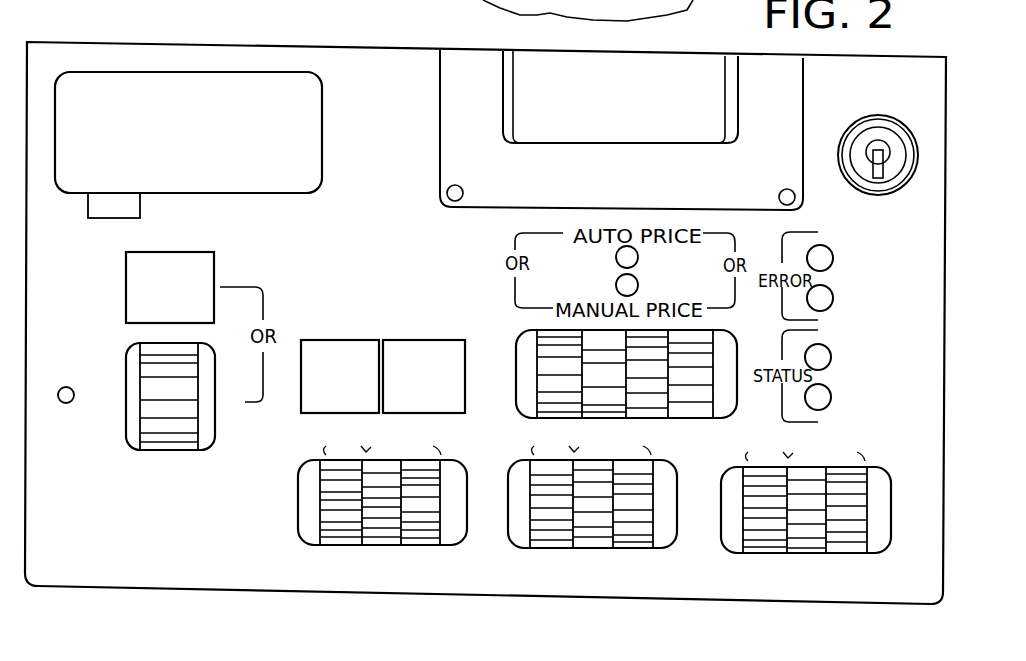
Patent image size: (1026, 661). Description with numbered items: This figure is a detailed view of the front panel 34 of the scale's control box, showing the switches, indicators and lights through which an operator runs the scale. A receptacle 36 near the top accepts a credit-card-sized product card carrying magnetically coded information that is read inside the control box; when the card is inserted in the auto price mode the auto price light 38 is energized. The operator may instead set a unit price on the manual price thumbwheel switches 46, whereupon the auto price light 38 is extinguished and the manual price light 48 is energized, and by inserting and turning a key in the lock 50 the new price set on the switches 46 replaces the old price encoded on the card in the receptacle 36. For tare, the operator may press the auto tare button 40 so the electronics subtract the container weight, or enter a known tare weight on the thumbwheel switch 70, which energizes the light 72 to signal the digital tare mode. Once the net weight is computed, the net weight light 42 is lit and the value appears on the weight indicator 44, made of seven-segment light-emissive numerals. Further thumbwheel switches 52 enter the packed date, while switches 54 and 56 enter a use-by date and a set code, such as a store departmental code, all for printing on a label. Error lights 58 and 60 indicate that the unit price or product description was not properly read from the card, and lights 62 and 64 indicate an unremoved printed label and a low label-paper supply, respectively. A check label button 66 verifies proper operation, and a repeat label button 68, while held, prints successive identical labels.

The front panel 34 is at (353, 58).
The receptacle 36 is at (548, 63).
The auto price light 38 is at (638, 258).
The auto tare button 40 is at (216, 277).
The net weight light 42 is at (107, 219).
The weight indicator 44 is at (322, 118).
The manual price thumbwheel switches 46 is at (605, 408).
The manual price light 48 is at (616, 285).
The lock 50 is at (866, 168).
The thumbwheel switches 52 is at (362, 535).
The front panel switches 54 is at (573, 540).
The front panel switches 56 is at (788, 537).
The error light 58 is at (827, 247).
The error light 60 is at (825, 305).
The light 62 is at (821, 346).
The light 64 is at (825, 408).
The check label button 66 is at (342, 346).
The repeat label button 68 is at (433, 346).
The thumbwheel switch 70 is at (176, 450).
The light 72 is at (69, 403).